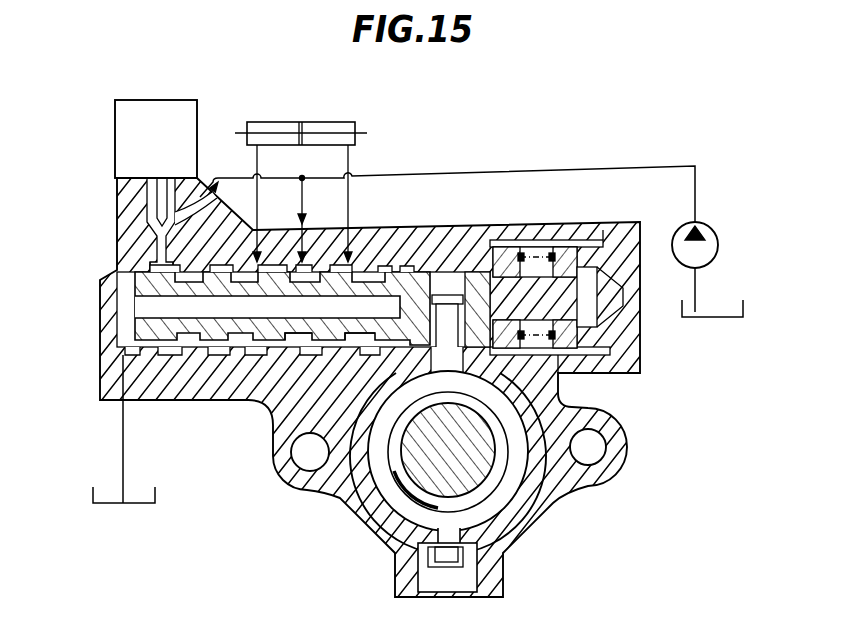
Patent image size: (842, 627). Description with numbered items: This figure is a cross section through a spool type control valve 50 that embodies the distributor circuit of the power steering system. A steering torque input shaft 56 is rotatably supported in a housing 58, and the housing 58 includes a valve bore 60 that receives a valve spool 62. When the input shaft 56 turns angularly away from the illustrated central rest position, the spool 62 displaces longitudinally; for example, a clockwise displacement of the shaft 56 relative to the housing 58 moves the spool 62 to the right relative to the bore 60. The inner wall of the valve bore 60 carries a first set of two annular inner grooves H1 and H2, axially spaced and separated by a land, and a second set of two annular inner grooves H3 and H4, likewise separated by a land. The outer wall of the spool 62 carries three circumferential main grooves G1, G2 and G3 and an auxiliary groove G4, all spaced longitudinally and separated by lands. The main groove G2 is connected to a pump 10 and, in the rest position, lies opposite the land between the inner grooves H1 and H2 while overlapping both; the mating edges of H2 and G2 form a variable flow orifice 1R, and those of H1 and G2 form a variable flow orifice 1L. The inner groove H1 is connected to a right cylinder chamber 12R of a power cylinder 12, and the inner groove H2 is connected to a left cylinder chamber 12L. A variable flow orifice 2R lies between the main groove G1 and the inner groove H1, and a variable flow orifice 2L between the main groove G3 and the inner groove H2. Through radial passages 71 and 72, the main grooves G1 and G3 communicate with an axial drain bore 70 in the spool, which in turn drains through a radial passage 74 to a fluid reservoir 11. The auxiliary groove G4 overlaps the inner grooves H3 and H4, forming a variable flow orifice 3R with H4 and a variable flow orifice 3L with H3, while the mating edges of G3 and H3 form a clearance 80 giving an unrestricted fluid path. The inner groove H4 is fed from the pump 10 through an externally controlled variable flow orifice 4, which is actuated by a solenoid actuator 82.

The externally controlled variable flow orifice 4 is at (143, 232).
The variable flow orifice 3R is at (158, 263).
The variable flow orifice 3L is at (210, 262).
The variable flow orifice 2L is at (268, 260).
The variable flow orifice 2R is at (354, 260).
The variable flow orifice 1L is at (316, 237).
The variable flow orifice 1R is at (283, 262).
The main groove G1 is at (408, 260).
The main groove G2 is at (384, 260).
The main groove G3 is at (250, 355).
The auxiliary groove G4 is at (175, 355).
The inner groove H1 is at (312, 355).
The inner groove H2 is at (292, 355).
The inner groove H3 is at (203, 355).
The inner groove H4 is at (158, 355).
The pump 10 is at (673, 230).
The fluid reservoir 11 is at (712, 318).
The power cylinder 12 is at (310, 122).
The left cylinder chamber 12L is at (268, 122).
The right cylinder chamber 12R is at (342, 122).
The control valve 50 is at (578, 172).
The steering torque input shaft 56 is at (482, 473).
The housing 58 is at (579, 232).
The valve bore 60 is at (480, 260).
The valve spool 62 is at (272, 355).
The axial drain bore 70 is at (222, 309).
The radial passage 71 is at (397, 334).
The radial passage 72 is at (267, 303).
The radial passage 74 is at (122, 380).
The clearance 80 is at (222, 355).
The solenoid actuator 82 is at (168, 151).